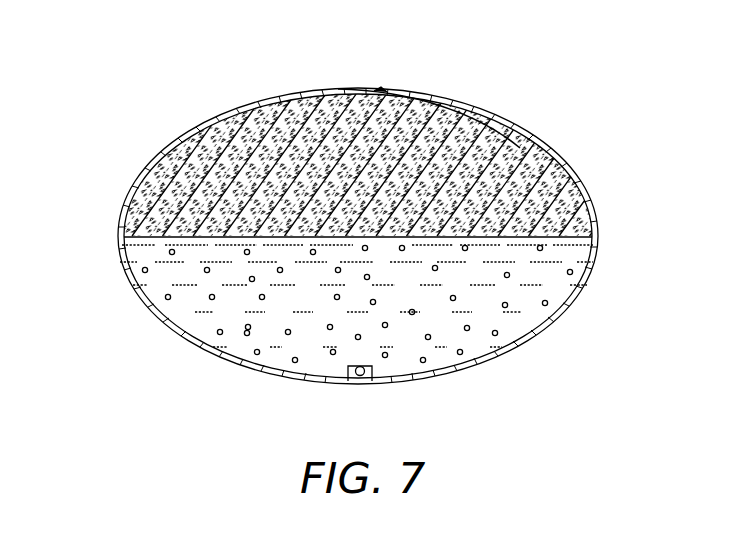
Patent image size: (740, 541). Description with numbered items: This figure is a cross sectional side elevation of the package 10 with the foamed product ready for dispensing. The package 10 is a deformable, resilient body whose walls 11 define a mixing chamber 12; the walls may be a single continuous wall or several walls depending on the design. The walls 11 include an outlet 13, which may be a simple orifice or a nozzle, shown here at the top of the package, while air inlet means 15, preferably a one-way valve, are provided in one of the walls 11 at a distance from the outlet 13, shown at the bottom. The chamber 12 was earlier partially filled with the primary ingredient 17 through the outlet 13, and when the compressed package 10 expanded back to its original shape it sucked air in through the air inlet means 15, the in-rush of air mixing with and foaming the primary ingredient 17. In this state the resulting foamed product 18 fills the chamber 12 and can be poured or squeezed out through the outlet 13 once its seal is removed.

The package 10 is at (476, 73).
The walls 11 is at (198, 122).
The mixing chamber 12 is at (369, 185).
The outlet 13 is at (355, 88).
The air inlet means 15 is at (360, 387).
The primary ingredient 17 is at (527, 320).
The product 18 is at (514, 143).